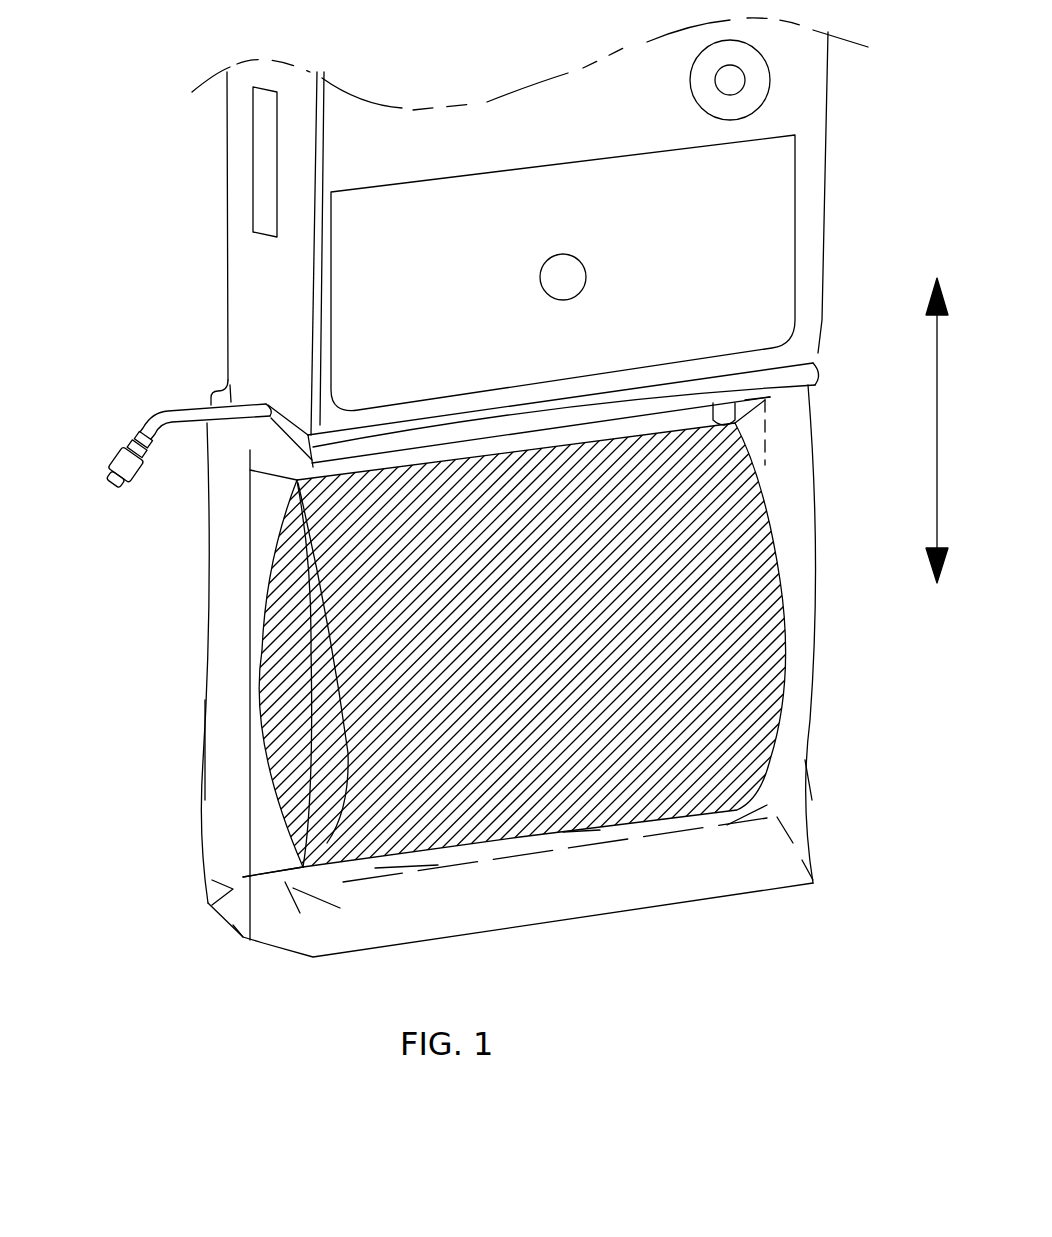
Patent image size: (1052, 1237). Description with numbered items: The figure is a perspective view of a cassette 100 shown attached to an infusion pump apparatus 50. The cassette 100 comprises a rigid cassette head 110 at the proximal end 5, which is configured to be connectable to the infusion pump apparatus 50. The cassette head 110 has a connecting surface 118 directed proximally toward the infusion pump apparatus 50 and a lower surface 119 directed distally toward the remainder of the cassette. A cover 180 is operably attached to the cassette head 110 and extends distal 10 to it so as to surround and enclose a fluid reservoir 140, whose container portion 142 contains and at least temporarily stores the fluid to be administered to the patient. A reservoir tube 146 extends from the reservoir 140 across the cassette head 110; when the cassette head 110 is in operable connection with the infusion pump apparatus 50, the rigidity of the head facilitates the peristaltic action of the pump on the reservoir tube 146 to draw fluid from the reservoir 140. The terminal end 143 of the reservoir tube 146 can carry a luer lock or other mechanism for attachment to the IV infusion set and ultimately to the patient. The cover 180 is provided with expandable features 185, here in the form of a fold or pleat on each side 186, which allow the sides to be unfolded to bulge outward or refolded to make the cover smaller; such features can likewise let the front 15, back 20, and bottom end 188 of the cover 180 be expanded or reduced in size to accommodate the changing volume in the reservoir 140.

The proximal end 5 is at (937, 397).
The distal direction 10 is at (941, 580).
The front 15 is at (790, 755).
The back 20 is at (220, 678).
The infusion pump apparatus 50 is at (113, 67).
The cassette 100 is at (103, 407).
The cassette head 110 is at (818, 353).
The connecting surface 118 is at (218, 383).
The lower surface 119 is at (770, 397).
The fluid reservoir 140 is at (526, 645).
The container portion 142 is at (713, 723).
The terminal end 143 is at (137, 487).
The reservoir tube 146 is at (190, 417).
The cover 180 is at (815, 547).
The expandable features 185 is at (245, 620).
The side 186 is at (203, 770).
The bottom end 188 is at (235, 922).